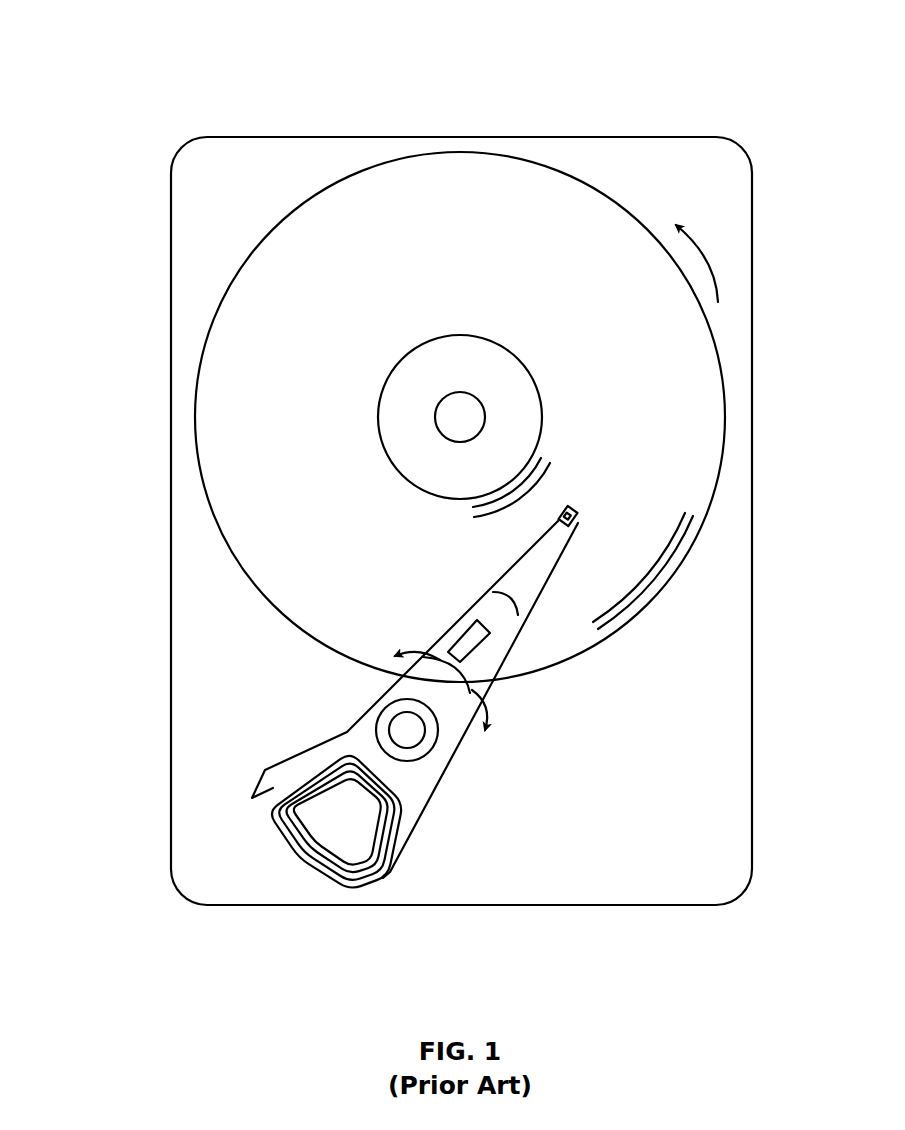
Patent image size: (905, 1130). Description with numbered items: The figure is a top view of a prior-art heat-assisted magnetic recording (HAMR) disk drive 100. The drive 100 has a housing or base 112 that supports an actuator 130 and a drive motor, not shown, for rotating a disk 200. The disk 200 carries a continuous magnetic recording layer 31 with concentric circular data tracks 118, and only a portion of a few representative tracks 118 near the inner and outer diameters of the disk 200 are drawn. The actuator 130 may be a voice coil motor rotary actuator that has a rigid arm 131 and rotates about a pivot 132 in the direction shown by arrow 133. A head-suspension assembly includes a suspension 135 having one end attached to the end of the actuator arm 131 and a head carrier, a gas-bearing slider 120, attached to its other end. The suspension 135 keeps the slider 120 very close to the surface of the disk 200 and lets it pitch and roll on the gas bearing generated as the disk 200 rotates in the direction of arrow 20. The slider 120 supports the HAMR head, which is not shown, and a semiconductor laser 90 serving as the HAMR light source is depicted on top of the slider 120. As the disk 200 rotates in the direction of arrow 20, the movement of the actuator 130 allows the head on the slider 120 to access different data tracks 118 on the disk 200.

The HAMR disk drive 100 is at (164, 52).
The housing or base 112 is at (682, 136).
The disk 200 is at (497, 417).
The continuous magnetic recording layer 31 is at (703, 380).
The arrow 20 is at (694, 239).
The data tracks 118 is at (468, 499).
The semiconductor laser 90 is at (582, 515).
The gas-bearing slider 120 is at (609, 508).
The suspension 135 is at (504, 583).
The rigid arm 131 is at (448, 637).
The pivot 132 is at (394, 725).
The arrow 133 is at (485, 713).
The actuator 130 is at (258, 784).